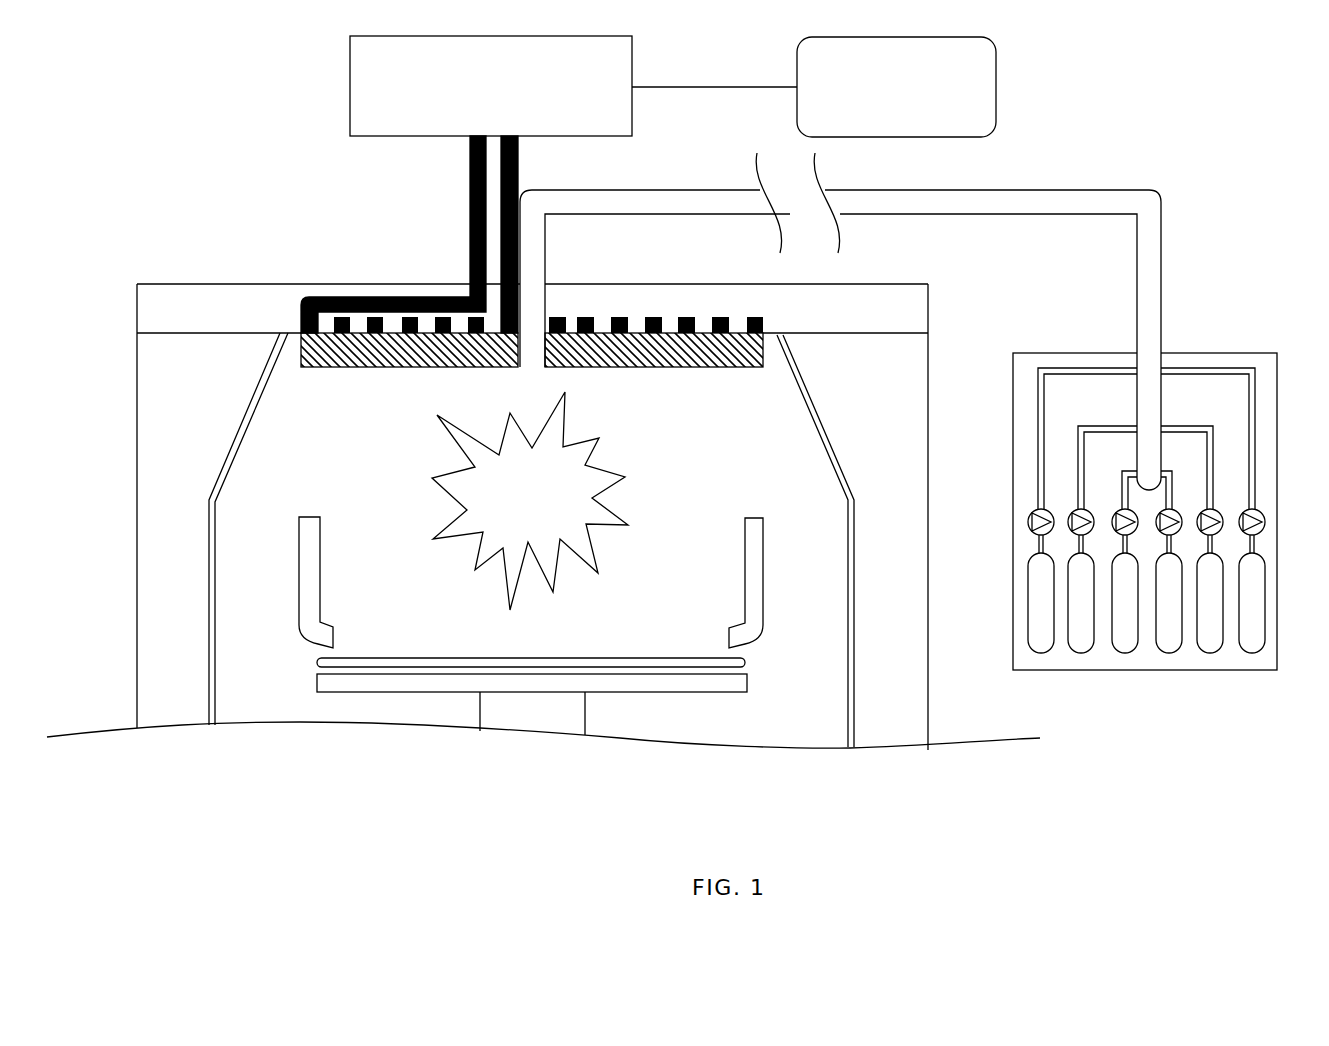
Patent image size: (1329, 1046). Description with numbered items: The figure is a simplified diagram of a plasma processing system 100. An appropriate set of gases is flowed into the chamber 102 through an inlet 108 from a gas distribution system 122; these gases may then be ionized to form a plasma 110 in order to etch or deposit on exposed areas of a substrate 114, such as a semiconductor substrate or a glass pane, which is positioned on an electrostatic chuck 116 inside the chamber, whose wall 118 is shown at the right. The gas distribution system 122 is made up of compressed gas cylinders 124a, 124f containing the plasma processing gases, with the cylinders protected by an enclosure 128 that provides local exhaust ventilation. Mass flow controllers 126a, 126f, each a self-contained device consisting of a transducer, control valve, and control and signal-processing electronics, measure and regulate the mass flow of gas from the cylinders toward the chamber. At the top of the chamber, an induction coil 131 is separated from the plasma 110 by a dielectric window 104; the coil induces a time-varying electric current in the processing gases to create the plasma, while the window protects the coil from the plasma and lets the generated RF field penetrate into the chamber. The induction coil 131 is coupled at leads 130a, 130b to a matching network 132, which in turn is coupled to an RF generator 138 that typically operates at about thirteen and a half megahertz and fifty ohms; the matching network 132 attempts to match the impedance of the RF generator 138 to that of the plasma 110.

The plasma processing system 100 is at (225, 133).
The chamber 102 is at (240, 303).
The dielectric window 104 is at (385, 352).
The inlet 108 is at (532, 265).
The plasma 110 is at (530, 501).
The substrate 114 is at (400, 662).
The electrostatic chuck 116 is at (531, 626).
The chamber wall 118 is at (928, 397).
The gas distribution system 122 is at (1143, 257).
The compressed gas cylinder 124a is at (1043, 642).
The compressed gas cylinder 124f is at (1247, 642).
The mass flow controller 126a is at (1030, 512).
The mass flow controller 126f is at (1262, 520).
The enclosure 128 is at (1131, 525).
The lead 130a is at (470, 152).
The lead 130b is at (517, 178).
The induction coil 131 is at (301, 296).
The matching network 132 is at (373, 62).
The RF generator 138 is at (996, 88).